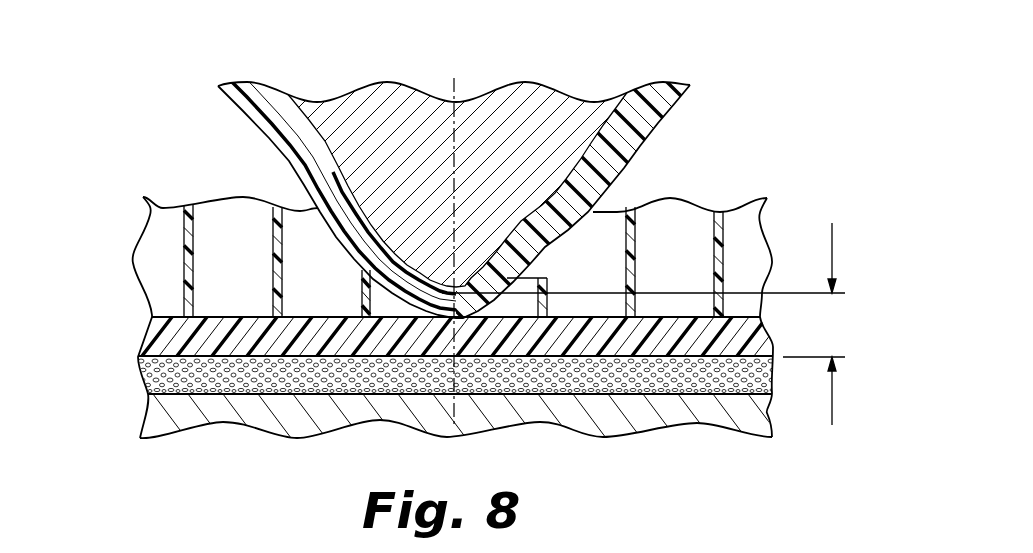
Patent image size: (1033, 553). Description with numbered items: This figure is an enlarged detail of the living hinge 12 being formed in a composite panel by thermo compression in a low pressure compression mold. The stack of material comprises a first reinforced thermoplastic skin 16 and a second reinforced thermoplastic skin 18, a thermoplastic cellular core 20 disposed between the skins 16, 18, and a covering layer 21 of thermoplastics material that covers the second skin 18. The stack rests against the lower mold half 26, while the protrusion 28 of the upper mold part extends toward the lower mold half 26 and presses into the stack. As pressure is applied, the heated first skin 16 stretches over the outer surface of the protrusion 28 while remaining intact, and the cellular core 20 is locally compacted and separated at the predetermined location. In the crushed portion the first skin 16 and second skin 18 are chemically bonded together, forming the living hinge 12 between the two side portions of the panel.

The living hinge 12 is at (445, 292).
The first reinforced thermoplastic skin 16 is at (626, 160).
The second reinforced thermoplastic skin 18 is at (138, 337).
The thermoplastic cellular core 20 is at (137, 263).
The covering layer 21 is at (137, 377).
The lower mold half 26 is at (137, 417).
The protrusion 28 is at (525, 100).